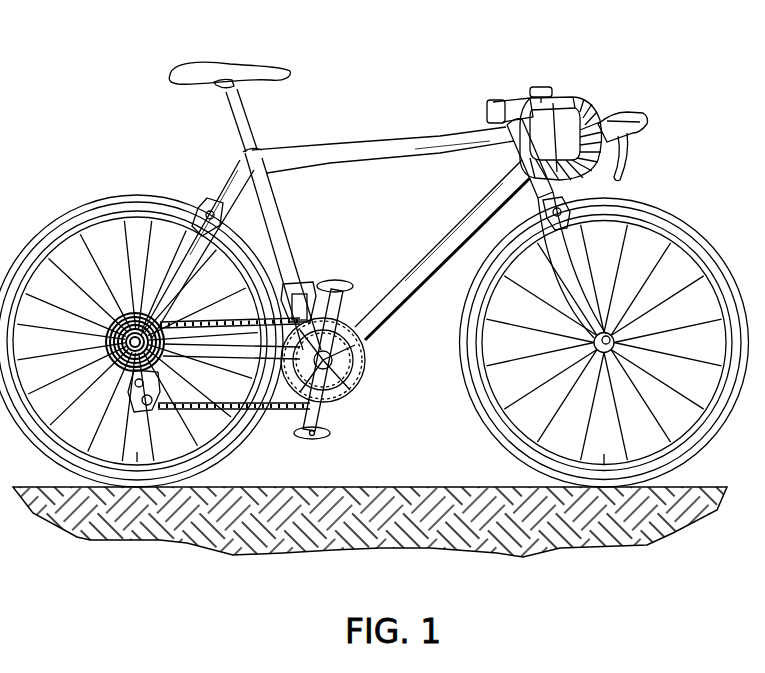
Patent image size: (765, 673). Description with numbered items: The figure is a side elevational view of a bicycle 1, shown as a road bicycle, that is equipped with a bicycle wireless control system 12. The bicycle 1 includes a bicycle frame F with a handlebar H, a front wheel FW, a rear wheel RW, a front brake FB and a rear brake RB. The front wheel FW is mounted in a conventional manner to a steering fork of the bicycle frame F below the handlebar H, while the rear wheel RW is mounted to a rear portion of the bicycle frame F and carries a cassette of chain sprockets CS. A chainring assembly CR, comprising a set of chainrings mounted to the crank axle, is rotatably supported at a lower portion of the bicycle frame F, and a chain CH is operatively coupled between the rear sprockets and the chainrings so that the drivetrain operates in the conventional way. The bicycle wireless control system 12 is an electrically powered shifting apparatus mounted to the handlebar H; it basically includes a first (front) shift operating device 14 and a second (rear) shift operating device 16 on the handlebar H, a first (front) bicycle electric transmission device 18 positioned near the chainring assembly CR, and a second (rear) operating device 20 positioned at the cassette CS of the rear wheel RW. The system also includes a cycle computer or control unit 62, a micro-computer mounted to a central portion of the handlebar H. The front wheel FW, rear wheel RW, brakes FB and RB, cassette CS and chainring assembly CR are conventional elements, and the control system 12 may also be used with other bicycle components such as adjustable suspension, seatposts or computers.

The bicycle 1 is at (634, 60).
The bicycle wireless control system 12 is at (665, 142).
The first (front) shift operating device 14 is at (669, 132).
The second (rear) shift operating device 16 is at (641, 118).
The first (front) bicycle electric transmission device 18 is at (311, 282).
The second (rear) operating device 20 is at (135, 418).
The cycle computer or control unit 62 is at (537, 85).
The bicycle frame F is at (370, 138).
The handlebar H is at (571, 96).
The rear wheel RW is at (58, 228).
The front wheel FW is at (663, 220).
The cassette of chain sprockets CS is at (136, 310).
The rear brake RB is at (206, 204).
The front brake FB is at (556, 197).
The chainring assembly CR is at (358, 354).
The chain CH is at (285, 408).